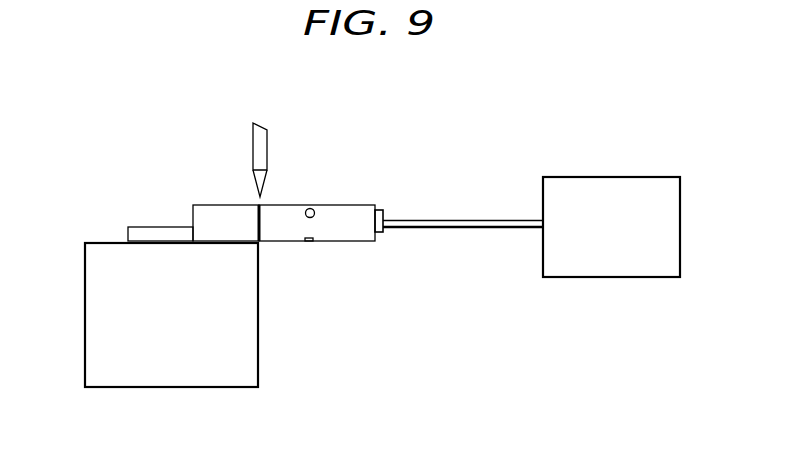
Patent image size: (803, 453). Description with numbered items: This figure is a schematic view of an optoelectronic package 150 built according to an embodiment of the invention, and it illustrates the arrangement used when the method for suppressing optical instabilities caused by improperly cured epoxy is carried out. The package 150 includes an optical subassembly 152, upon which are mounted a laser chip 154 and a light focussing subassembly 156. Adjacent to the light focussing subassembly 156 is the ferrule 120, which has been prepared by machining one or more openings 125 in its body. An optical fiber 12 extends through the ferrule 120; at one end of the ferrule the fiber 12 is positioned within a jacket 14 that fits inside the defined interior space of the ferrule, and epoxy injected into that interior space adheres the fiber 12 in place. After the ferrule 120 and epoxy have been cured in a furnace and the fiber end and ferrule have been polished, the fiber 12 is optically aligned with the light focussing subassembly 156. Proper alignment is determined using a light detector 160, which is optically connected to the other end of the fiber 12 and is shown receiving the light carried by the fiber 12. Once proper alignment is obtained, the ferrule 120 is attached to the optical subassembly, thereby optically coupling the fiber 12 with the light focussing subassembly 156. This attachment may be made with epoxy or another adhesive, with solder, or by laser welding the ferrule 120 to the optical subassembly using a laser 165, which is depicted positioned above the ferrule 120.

The optoelectronic package 150 is at (433, 123).
The optical subassembly 152 is at (85, 313).
The laser chip 154 is at (135, 237).
The light focussing subassembly 156 is at (214, 212).
The ferrule 120 is at (358, 212).
The openings 125 is at (310, 208).
The jacket 14 is at (383, 232).
The optical fiber 12 is at (466, 220).
The light detector 160 is at (630, 268).
The laser 165 is at (253, 147).